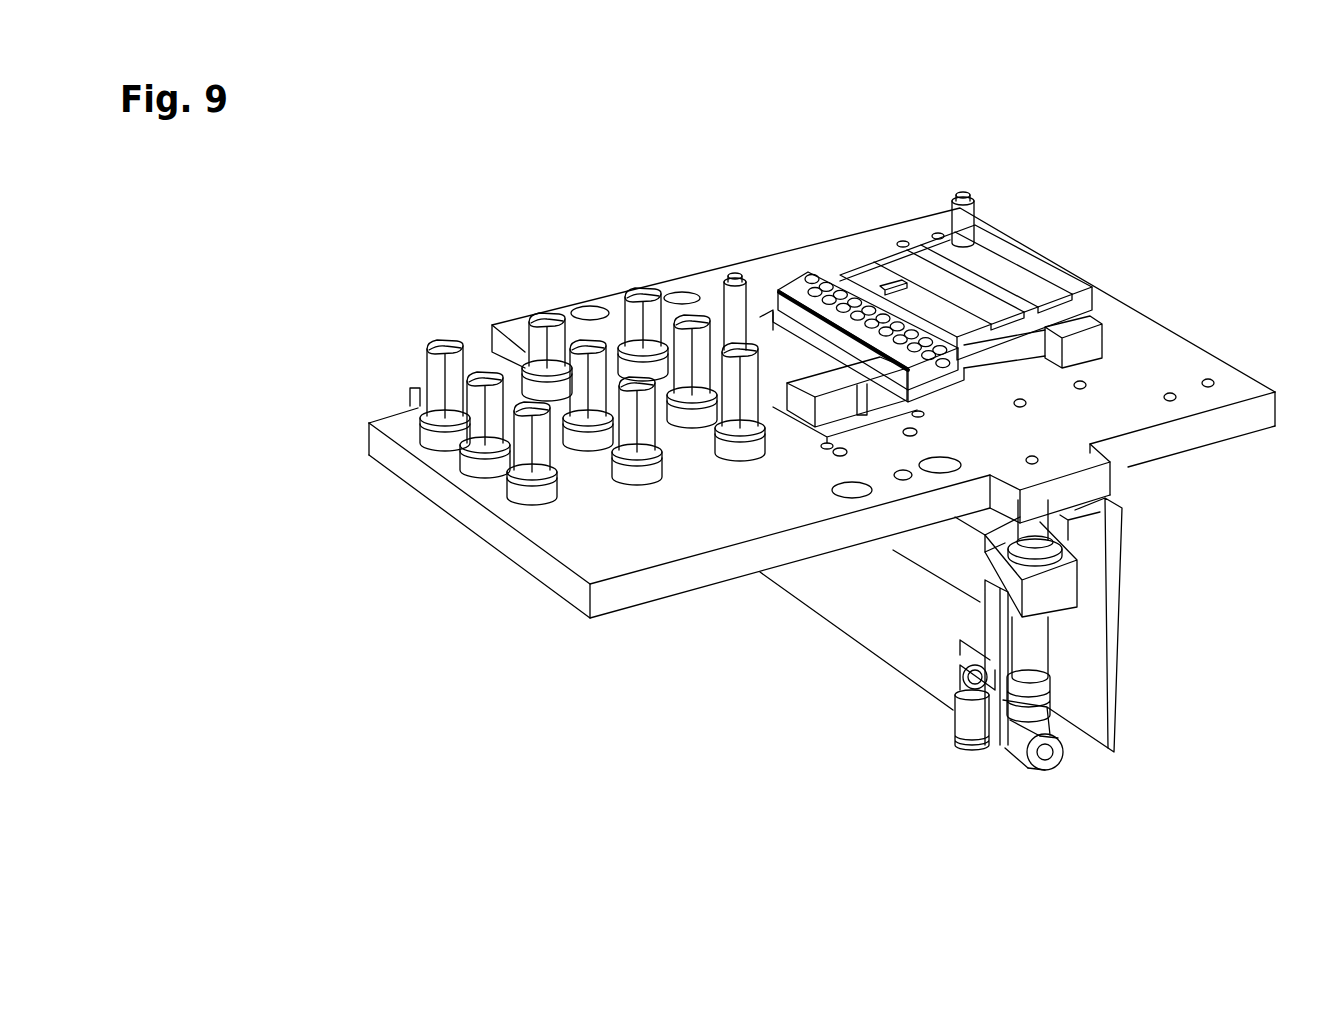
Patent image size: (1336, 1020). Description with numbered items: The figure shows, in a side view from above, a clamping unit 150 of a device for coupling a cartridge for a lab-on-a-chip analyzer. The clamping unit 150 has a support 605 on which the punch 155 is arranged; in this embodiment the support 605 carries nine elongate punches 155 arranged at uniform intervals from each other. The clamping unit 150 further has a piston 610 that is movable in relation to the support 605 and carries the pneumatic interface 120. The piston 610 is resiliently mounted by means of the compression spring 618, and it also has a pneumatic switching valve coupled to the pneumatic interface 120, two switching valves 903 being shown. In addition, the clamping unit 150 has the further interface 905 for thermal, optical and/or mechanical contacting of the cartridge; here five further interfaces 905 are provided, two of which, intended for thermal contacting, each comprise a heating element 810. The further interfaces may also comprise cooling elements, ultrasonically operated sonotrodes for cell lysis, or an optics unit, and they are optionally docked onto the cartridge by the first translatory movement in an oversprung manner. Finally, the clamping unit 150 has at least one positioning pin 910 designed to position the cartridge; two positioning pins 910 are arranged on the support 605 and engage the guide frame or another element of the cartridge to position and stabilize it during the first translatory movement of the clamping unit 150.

The clamping unit 150 is at (460, 246).
The support 605 is at (543, 574).
The punch 155 is at (516, 478).
The positioning pin 910 is at (722, 288).
The pneumatic interface 120 is at (806, 270).
The further interface 905 is at (883, 256).
The heating element 810 is at (1010, 320).
The piston 610 is at (1070, 597).
The compression spring 618 is at (1005, 672).
The switching valve 903 is at (1007, 752).